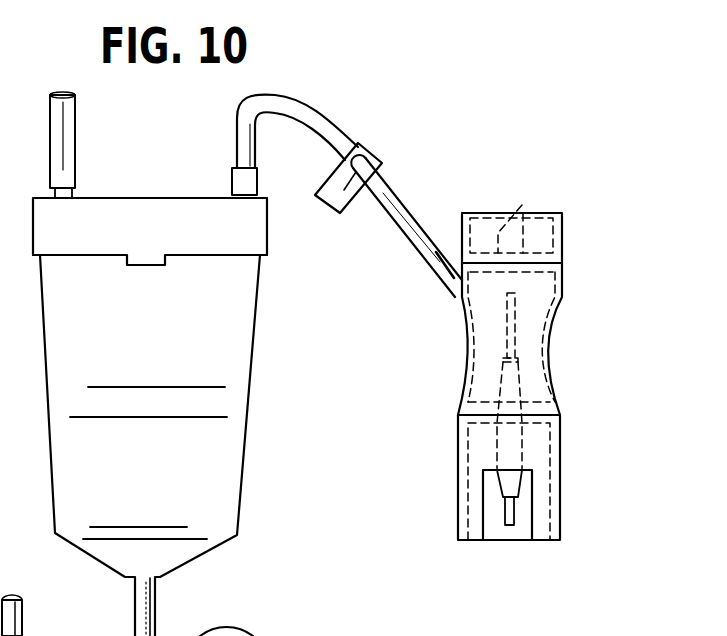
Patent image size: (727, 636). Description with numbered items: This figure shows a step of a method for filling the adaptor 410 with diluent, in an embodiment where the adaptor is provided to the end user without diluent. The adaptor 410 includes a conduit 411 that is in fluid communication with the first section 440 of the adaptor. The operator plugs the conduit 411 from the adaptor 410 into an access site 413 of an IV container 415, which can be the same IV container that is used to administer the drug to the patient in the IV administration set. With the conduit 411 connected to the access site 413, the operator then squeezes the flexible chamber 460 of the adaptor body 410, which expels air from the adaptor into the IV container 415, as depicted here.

The adaptor 410 is at (566, 372).
The conduit 411 is at (423, 257).
The access site 413 is at (231, 195).
The IV container 415 is at (227, 373).
The first section 440 is at (562, 282).
The flexible chamber 460 is at (550, 383).